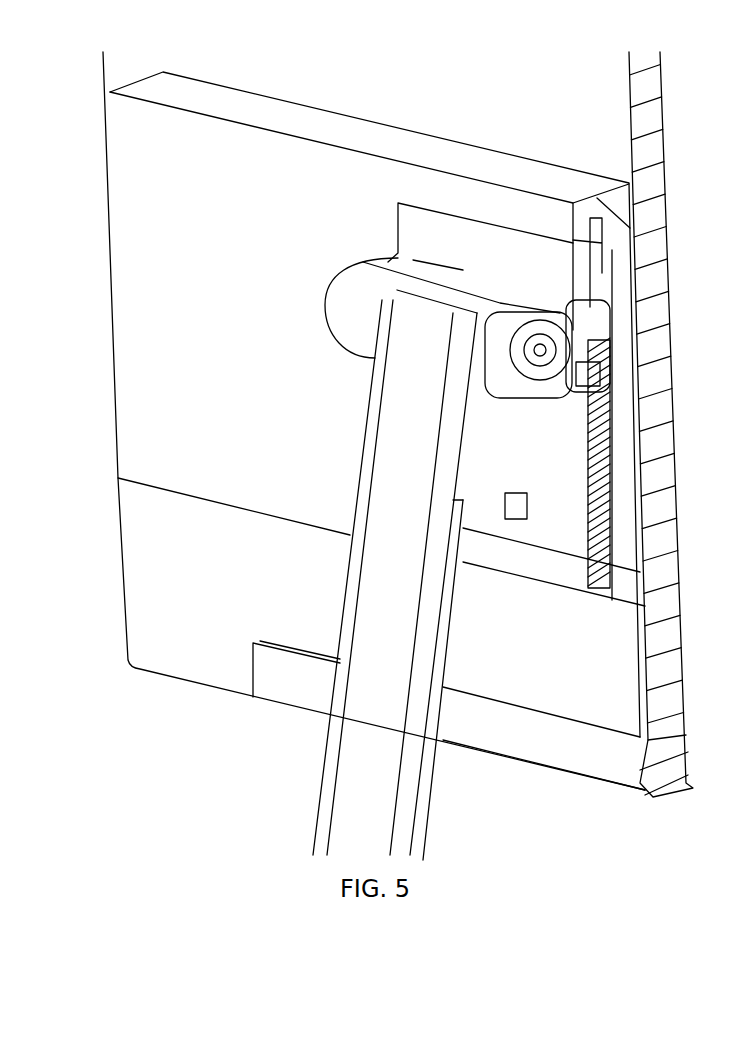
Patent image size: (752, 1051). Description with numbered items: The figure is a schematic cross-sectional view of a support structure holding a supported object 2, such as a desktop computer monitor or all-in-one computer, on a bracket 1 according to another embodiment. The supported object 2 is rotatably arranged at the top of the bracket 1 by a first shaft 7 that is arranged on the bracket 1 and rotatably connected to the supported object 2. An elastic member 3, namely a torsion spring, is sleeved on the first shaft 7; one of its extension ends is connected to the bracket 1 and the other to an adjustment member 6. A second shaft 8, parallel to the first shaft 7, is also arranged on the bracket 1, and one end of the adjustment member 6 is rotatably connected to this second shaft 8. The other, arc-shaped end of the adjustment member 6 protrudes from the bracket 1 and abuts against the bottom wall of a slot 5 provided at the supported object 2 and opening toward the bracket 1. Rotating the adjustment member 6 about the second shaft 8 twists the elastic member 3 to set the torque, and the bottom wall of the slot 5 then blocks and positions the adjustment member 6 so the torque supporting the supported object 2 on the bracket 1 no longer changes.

The bracket 1 is at (305, 777).
The supported object 2 is at (170, 694).
The elastic member 3 is at (499, 368).
The slot 5 is at (607, 319).
The adjustment member 6 is at (593, 394).
The first shaft 7 is at (515, 341).
The second shaft 8 is at (543, 304).